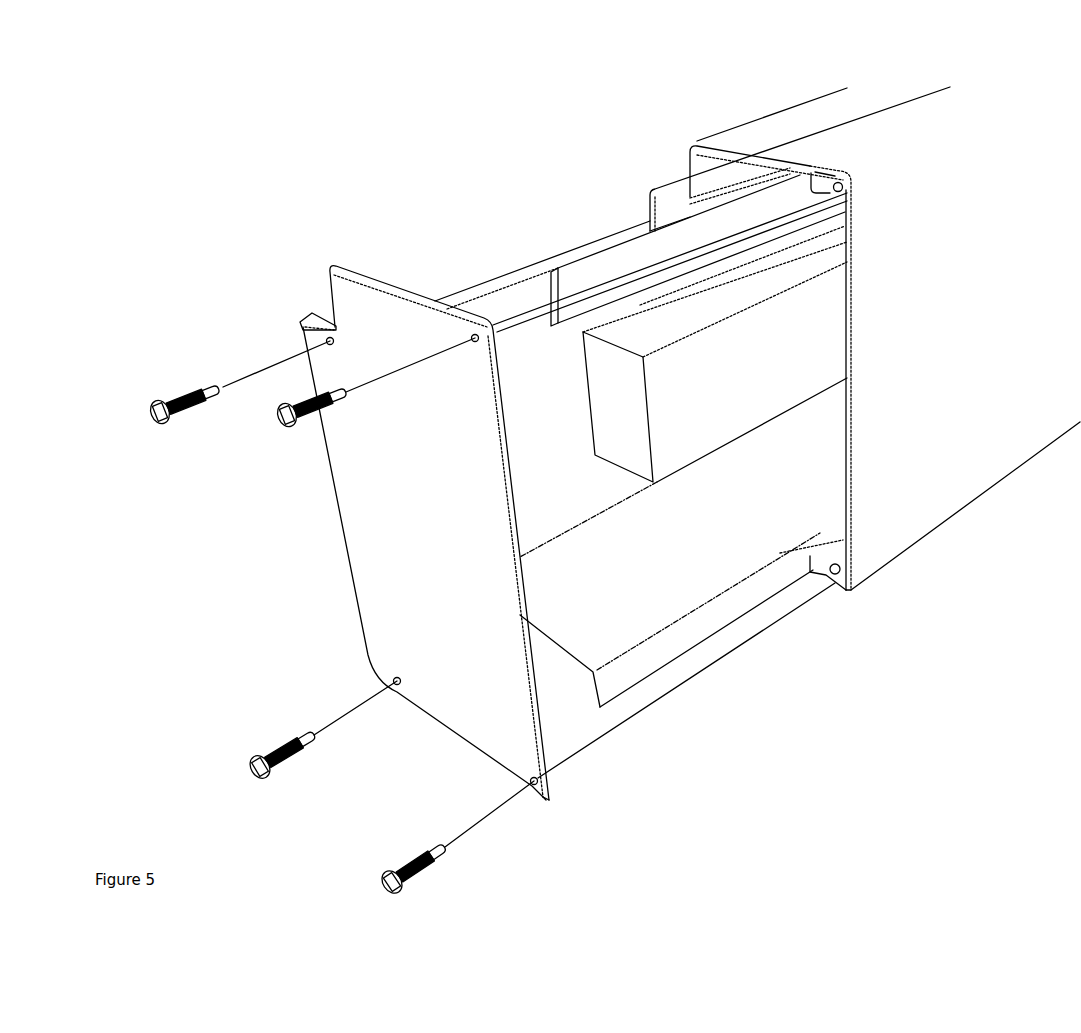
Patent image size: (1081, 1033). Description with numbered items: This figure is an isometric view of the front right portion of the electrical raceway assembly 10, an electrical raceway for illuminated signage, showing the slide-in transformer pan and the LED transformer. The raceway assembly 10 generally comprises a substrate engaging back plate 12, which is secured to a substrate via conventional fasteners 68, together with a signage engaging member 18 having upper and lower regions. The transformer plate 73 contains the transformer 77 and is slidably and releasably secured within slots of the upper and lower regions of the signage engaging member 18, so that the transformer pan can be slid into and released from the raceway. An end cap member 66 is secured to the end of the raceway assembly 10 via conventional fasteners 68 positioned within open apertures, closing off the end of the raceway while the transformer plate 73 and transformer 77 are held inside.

The raceway assembly 10 is at (252, 211).
The substrate engaging back member/plate 12 is at (649, 192).
The signage engaging member/plate 18 is at (1013, 303).
The end cap member 66 is at (446, 533).
The fasteners 68 is at (157, 400).
The transformer plate 73 is at (562, 257).
The transformer 77 is at (657, 484).